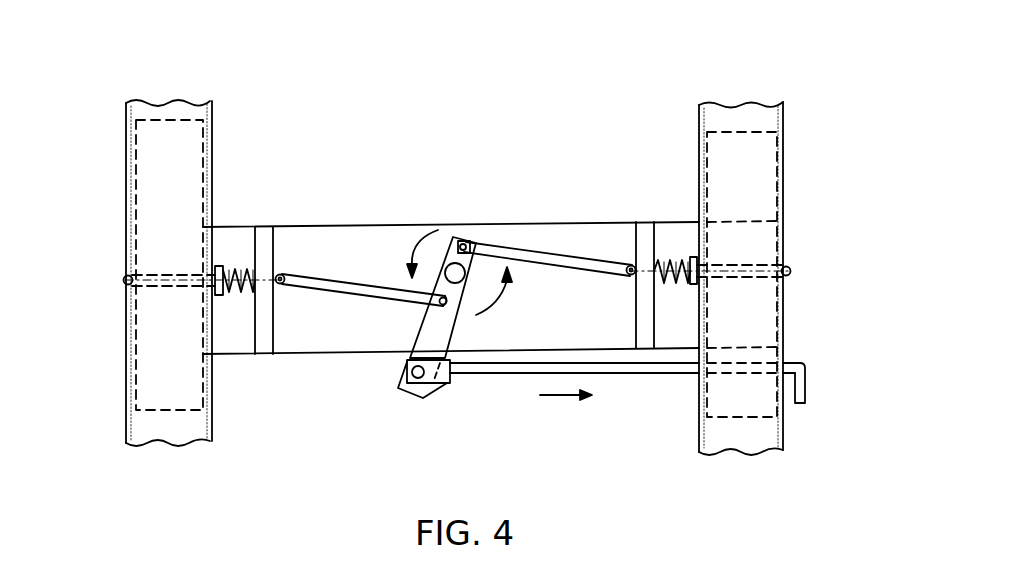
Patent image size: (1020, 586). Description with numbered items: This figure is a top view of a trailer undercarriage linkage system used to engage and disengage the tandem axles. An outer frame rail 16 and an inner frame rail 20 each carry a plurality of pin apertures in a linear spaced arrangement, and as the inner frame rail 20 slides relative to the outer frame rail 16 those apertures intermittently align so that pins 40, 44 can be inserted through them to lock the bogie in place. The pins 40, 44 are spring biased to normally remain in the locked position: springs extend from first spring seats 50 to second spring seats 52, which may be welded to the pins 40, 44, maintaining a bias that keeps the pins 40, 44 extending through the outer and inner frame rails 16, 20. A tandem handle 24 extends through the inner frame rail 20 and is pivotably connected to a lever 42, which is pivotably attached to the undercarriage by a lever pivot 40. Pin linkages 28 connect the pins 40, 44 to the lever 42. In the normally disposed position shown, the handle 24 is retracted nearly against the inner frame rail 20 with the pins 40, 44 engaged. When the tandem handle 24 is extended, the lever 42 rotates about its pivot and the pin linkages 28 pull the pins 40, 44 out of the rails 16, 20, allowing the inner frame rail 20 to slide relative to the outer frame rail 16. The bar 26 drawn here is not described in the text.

The outer frame rail 16 is at (759, 115).
The inner frame rail 20 is at (528, 247).
The tandem handle 24 is at (803, 388).
The actuating bar 26 is at (515, 372).
The pin linkage 28 is at (341, 288).
The pin 40 is at (790, 268).
The lever 42 is at (226, 268).
The pin 44 is at (125, 281).
The first spring seat 50 is at (268, 250).
The second spring seat 52 is at (221, 266).